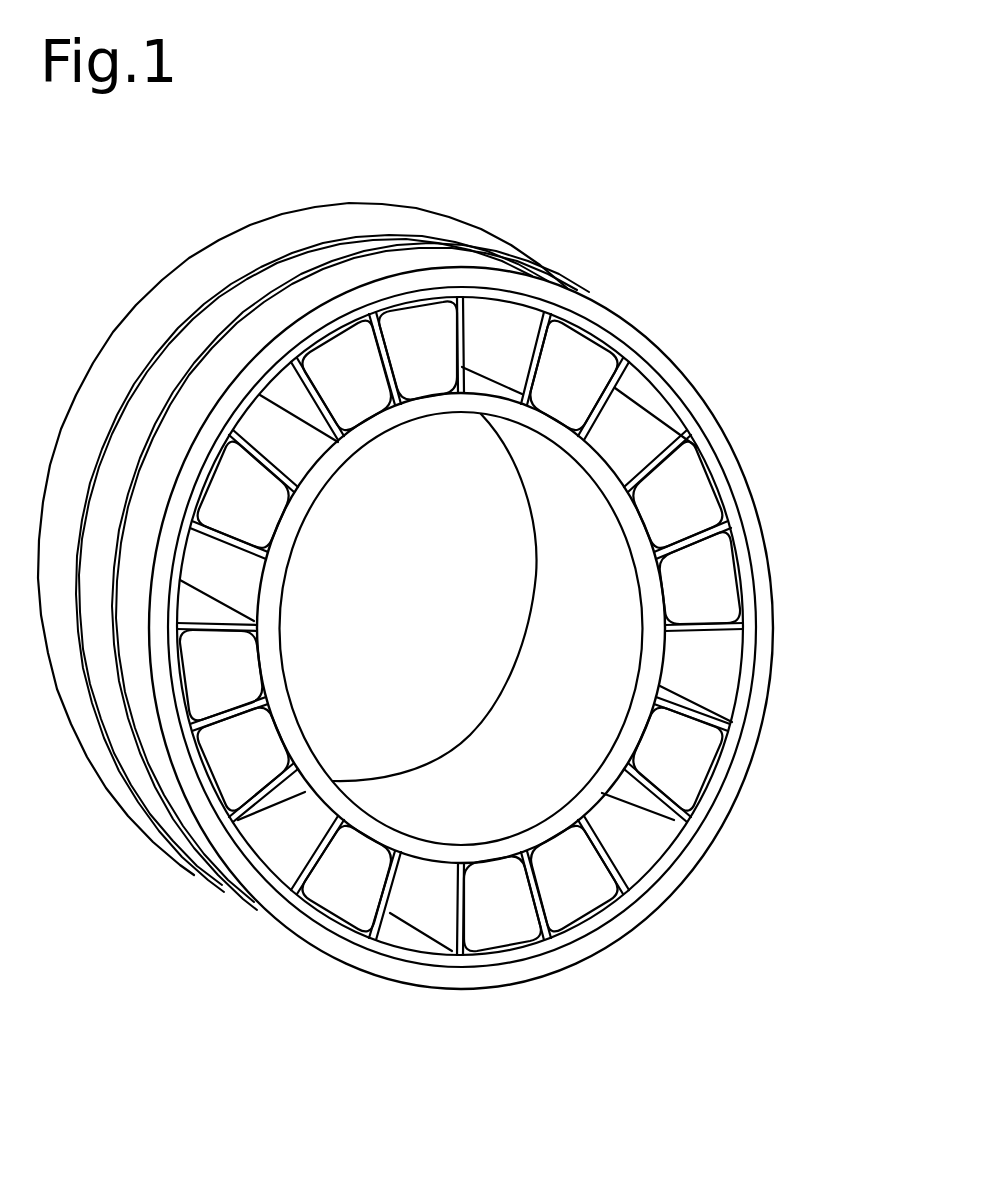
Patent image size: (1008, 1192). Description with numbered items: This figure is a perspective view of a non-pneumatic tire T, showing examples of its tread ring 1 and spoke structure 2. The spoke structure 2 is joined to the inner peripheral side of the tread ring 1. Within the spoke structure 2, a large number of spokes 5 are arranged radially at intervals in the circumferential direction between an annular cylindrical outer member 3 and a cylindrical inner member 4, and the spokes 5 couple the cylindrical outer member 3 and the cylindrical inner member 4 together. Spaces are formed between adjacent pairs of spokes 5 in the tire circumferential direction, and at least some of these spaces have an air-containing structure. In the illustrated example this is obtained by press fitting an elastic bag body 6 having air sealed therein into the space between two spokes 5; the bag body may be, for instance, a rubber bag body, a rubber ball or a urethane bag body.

The non-pneumatic tire T is at (168, 265).
The tread ring 1 is at (560, 304).
The spoke structure 2 is at (624, 350).
The cylindrical outer member 3 is at (682, 400).
The cylindrical inner member 4 is at (660, 650).
The spoke 5 is at (740, 628).
The elastic bag body 6 is at (688, 498).